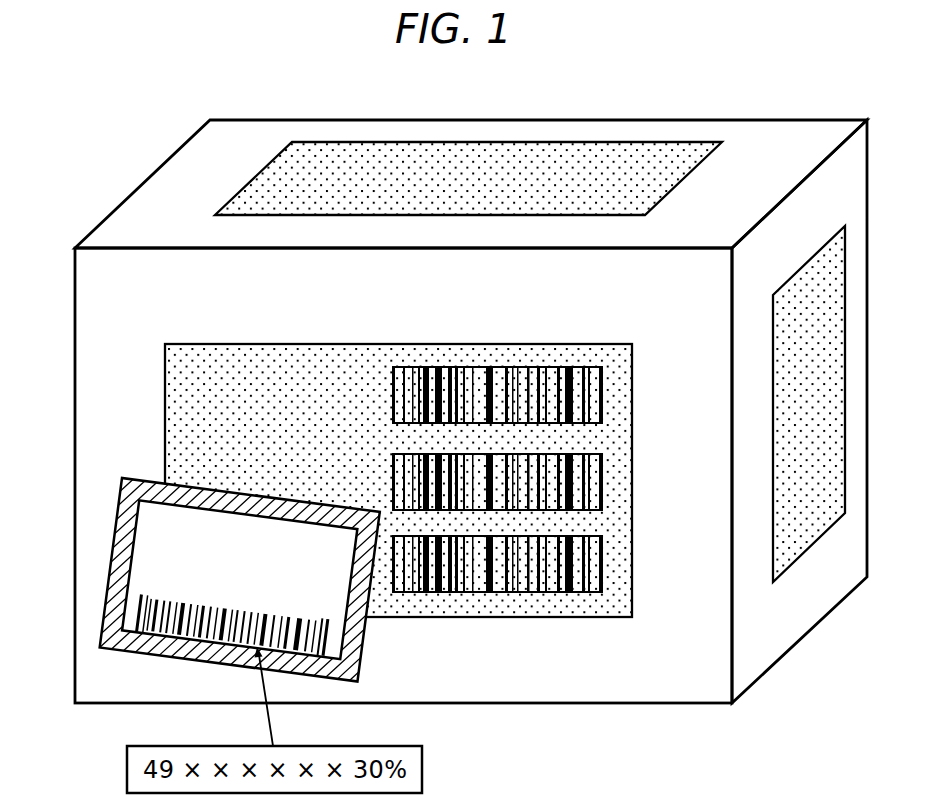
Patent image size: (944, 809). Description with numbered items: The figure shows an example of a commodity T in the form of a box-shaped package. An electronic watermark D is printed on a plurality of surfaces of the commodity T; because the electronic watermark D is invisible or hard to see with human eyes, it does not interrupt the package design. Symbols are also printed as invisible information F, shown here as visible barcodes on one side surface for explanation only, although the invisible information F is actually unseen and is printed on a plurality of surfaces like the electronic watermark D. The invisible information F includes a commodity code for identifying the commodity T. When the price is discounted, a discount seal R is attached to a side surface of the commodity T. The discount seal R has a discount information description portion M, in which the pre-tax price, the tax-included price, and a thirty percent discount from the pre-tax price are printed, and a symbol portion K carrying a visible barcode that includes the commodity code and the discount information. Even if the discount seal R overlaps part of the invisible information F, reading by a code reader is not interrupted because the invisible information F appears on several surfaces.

The commodity T is at (538, 127).
The electronic watermark D is at (445, 172).
The invisible information F is at (580, 593).
The discount seal R is at (257, 579).
The discount information description portion M is at (193, 555).
The symbol portion K is at (176, 618).